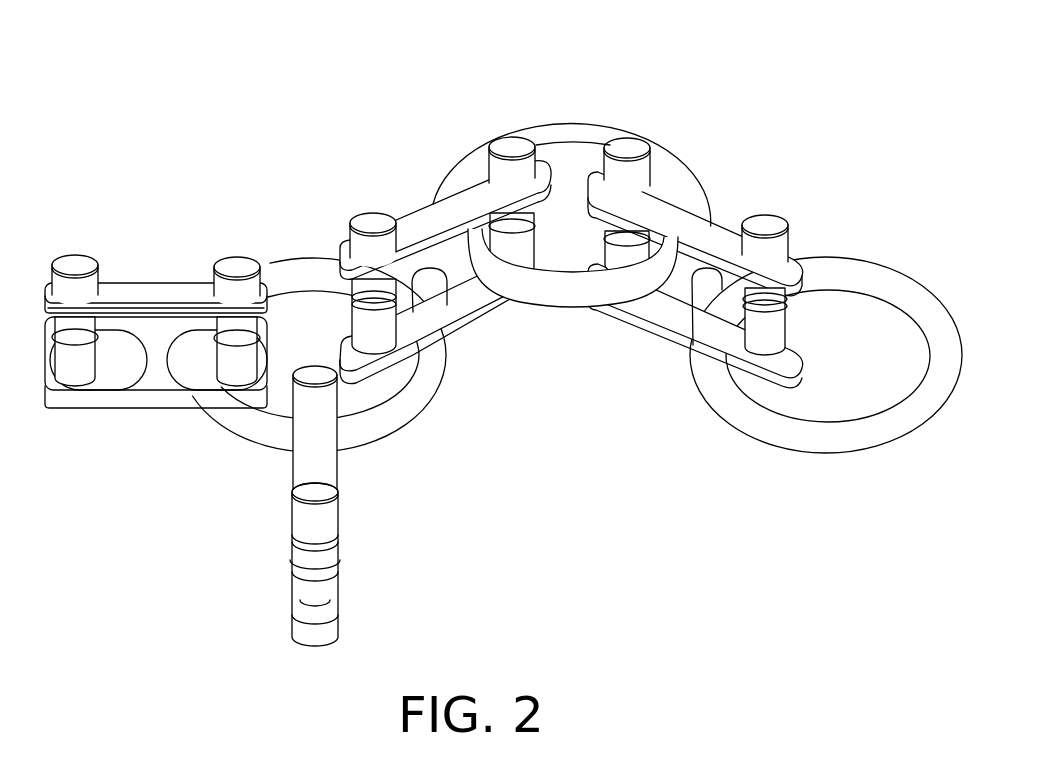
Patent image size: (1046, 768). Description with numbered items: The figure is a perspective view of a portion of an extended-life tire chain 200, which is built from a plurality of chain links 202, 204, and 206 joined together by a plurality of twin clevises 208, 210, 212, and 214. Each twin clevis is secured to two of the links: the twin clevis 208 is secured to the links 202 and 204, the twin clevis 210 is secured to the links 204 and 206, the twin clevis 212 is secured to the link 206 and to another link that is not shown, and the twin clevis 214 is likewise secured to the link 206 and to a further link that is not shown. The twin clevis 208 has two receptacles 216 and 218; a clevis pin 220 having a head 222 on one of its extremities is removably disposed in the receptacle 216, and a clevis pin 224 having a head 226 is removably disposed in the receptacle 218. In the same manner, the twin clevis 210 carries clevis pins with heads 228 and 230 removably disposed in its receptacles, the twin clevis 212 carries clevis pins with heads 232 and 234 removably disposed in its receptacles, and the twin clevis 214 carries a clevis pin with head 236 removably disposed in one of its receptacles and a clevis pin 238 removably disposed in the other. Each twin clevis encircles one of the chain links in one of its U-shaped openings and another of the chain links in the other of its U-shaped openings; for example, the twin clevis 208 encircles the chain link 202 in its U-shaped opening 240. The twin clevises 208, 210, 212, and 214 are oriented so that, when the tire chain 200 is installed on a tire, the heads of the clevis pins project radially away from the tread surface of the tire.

The extended-life tire chain 200 is at (258, 98).
The chain link 202 is at (827, 450).
The chain link 204 is at (602, 297).
The chain link 206 is at (440, 378).
The twin clevis 208 is at (727, 212).
The twin clevis 210 is at (470, 333).
The twin clevis 212 is at (338, 467).
The twin clevis 214 is at (153, 410).
The receptacle 216 is at (806, 256).
The receptacle 218 is at (640, 188).
The clevis pin 220 is at (788, 317).
The head 222 is at (767, 213).
The clevis pin 224 is at (587, 250).
The head 226 is at (631, 138).
The head 228 is at (511, 138).
The head 230 is at (373, 214).
The head 232 is at (316, 366).
The head 234 is at (332, 513).
The head 236 is at (237, 257).
The clevis pin 238 is at (72, 370).
The U-shaped opening 240 is at (698, 316).